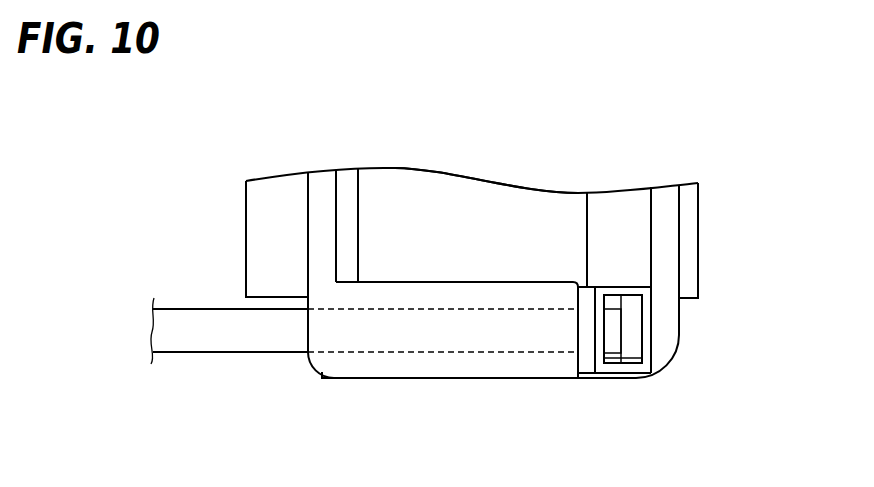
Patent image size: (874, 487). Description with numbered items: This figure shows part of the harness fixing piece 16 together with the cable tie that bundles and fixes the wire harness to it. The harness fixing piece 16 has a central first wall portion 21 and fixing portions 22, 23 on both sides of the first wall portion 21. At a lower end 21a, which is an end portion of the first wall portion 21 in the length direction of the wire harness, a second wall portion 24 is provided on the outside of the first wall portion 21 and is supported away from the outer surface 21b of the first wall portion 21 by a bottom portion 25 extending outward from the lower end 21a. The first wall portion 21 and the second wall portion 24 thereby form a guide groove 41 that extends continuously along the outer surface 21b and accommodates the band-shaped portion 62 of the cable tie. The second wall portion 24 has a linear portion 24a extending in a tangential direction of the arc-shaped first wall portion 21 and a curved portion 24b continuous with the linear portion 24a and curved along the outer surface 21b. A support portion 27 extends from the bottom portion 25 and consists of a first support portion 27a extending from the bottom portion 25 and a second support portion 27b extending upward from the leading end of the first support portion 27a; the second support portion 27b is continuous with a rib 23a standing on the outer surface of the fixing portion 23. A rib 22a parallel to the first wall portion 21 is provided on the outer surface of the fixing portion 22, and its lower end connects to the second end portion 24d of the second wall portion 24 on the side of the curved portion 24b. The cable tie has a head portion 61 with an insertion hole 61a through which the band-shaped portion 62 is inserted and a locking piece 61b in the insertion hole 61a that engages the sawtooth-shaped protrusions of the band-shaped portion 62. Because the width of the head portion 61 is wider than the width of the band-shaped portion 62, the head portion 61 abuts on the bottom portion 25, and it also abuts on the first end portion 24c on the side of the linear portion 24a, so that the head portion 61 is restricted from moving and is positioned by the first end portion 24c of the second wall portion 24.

The harness fixing piece 16 is at (723, 139).
The first wall portion 21 is at (398, 166).
The lower end 21a is at (470, 382).
The outer surface 21b is at (447, 180).
The fixing portion 22 is at (261, 179).
The rib 22a is at (323, 178).
The fixing portion 23 is at (702, 196).
The rib 23a is at (681, 233).
The second wall portion 24 is at (454, 253).
The linear portion 24a is at (518, 290).
The curved portion 24b is at (398, 290).
The first end portion 24c is at (580, 288).
The second end portion 24d is at (348, 280).
The bottom portion 25 is at (405, 373).
The support portion 27 is at (701, 330).
The first support portion 27a is at (630, 381).
The second support portion 27b is at (728, 303).
The guide groove 41 is at (462, 290).
The head portion 61 is at (658, 362).
The insertion hole 61a is at (637, 326).
The locking piece 61b is at (615, 354).
The band-shaped portion 62 is at (181, 354).